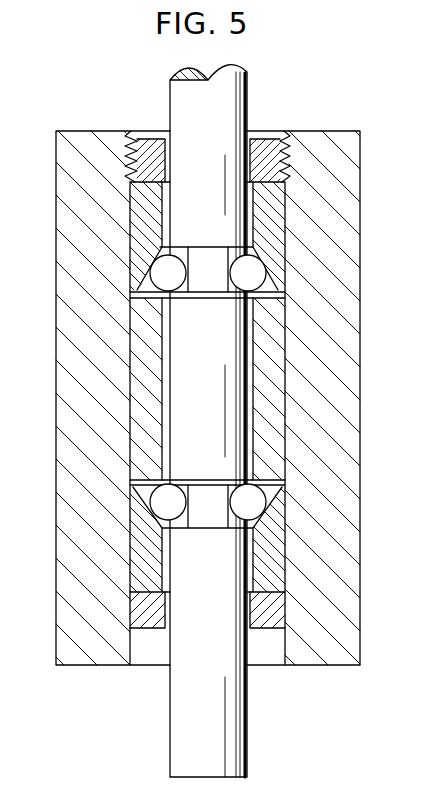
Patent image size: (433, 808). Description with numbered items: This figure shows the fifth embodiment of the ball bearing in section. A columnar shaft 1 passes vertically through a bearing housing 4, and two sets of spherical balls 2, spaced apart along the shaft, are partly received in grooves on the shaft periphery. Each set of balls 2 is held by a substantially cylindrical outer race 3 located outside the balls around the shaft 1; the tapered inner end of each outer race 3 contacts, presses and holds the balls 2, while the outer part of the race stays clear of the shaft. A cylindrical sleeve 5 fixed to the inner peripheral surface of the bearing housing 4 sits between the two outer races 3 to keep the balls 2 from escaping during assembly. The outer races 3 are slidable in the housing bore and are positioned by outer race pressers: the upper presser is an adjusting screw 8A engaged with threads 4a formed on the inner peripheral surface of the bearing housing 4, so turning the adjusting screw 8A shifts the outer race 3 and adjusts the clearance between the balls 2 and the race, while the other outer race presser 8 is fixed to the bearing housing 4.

The columnar shaft 1 is at (215, 407).
The spherical balls 2 is at (233, 267).
The outer race 3 is at (275, 221).
The bearing housing 4 is at (62, 312).
The thread 4a is at (128, 152).
The cylindrical sleeve 5 is at (278, 378).
The outer race presser 8 is at (272, 628).
The adjusting screw 8A is at (276, 143).